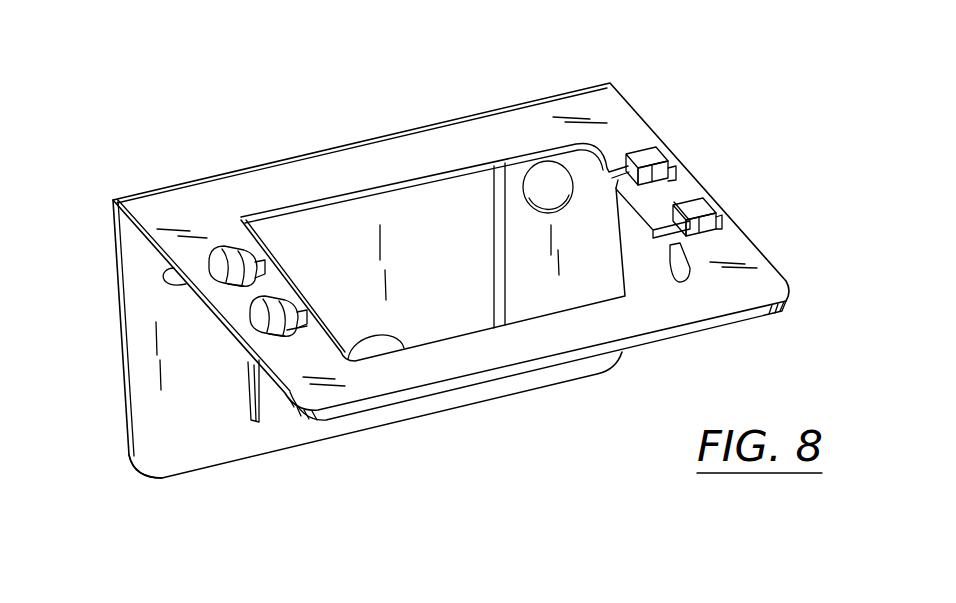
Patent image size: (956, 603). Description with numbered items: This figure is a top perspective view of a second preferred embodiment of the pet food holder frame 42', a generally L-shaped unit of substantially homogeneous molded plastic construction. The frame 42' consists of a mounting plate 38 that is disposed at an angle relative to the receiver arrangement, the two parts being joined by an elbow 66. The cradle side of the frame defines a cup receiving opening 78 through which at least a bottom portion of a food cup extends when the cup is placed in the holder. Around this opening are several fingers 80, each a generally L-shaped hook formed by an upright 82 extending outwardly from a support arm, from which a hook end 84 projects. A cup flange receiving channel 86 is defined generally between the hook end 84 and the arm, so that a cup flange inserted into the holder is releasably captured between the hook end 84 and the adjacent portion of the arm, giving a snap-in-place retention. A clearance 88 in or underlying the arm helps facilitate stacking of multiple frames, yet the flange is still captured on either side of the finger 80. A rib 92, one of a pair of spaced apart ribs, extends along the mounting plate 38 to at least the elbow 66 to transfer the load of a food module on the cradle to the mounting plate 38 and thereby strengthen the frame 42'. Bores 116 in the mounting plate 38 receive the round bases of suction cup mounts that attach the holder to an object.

The mounting plate 38 is at (115, 389).
The holder frame 42' is at (117, 496).
The elbow 66 is at (600, 83).
The cup receiving opening 78 is at (447, 338).
The finger 80 is at (219, 238).
The upright 82 is at (248, 286).
The hook end 84 is at (256, 272).
The cup flange receiving channel 86 is at (299, 340).
The clearance 88 is at (624, 194).
The rib 92 is at (250, 417).
The bore 116 is at (176, 283).